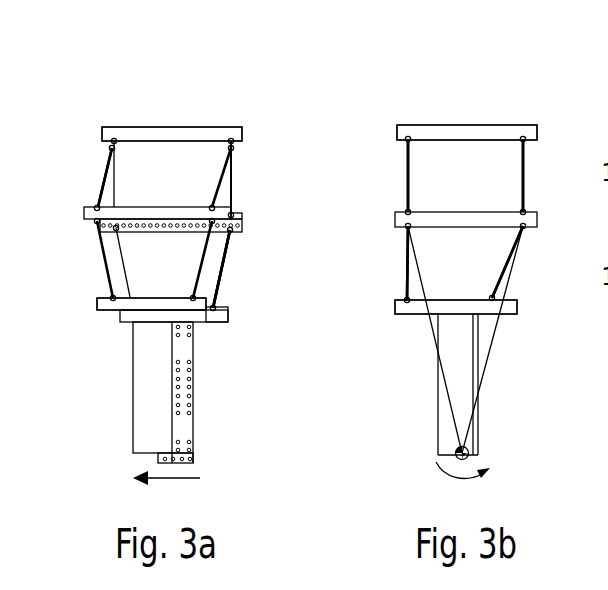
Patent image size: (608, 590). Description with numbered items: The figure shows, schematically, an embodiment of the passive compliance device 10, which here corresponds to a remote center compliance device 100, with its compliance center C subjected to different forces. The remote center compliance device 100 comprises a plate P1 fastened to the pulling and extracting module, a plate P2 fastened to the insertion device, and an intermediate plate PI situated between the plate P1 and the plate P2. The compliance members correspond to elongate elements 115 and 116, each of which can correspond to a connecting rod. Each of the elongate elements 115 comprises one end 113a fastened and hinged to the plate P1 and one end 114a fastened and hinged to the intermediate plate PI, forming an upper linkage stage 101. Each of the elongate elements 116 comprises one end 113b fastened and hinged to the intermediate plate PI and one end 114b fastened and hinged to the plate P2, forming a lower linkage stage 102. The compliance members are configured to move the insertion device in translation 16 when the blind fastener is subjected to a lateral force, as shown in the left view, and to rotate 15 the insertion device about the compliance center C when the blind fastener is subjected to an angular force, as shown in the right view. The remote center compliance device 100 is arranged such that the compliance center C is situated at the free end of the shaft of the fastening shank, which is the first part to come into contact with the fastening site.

In FIG. 3A, the passive compliance device 10 is at (180, 96).
In FIG. 3B, the passive compliance device 10 is at (463, 96).
In FIG. 3A, the plate P1 is at (203, 126).
In FIG. 3B, the plate P1 is at (500, 125).
In FIG. 3A, the end 113a is at (115, 139).
In FIG. 3B, the end 113a is at (408, 137).
In FIG. 3A, the first parallelogram linkage 101 is at (87, 157).
In FIG. 3B, the first parallelogram linkage 101 is at (382, 168).
In FIG. 3A, the end 114a is at (100, 206).
In FIG. 3B, the end 114a is at (414, 209).
In FIG. 3A, the elongate element 115 is at (220, 177).
In FIG. 3B, the elongate element 115 is at (523, 173).
In FIG. 3A, the intermediate plate PI is at (243, 218).
In FIG. 3B, the intermediate plate PI is at (528, 211).
In FIG. 3A, the end 113b is at (119, 231).
In FIG. 3B, the end 113b is at (411, 229).
In FIG. 3A, the second parallelogram linkage 102 is at (86, 264).
In FIG. 3B, the second parallelogram linkage 102 is at (390, 262).
In FIG. 3A, the elongate element 116 is at (217, 282).
In FIG. 3B, the elongate element 116 is at (408, 273).
In FIG. 3A, the end 114b is at (98, 304).
In FIG. 3B, the end 114b is at (413, 316).
In FIG. 3A, the plate P2 is at (110, 313).
In FIG. 3B, the plate P2 is at (503, 315).
In FIG. 3A, the remote center compliance device 100 is at (241, 272).
In FIG. 3B, the remote center compliance device 100 is at (530, 272).
In FIG. 3A, the translation 16 is at (167, 479).
In FIG. 3B, the rotation 15 is at (442, 477).
In FIG. 3B, the compliance center C is at (470, 461).